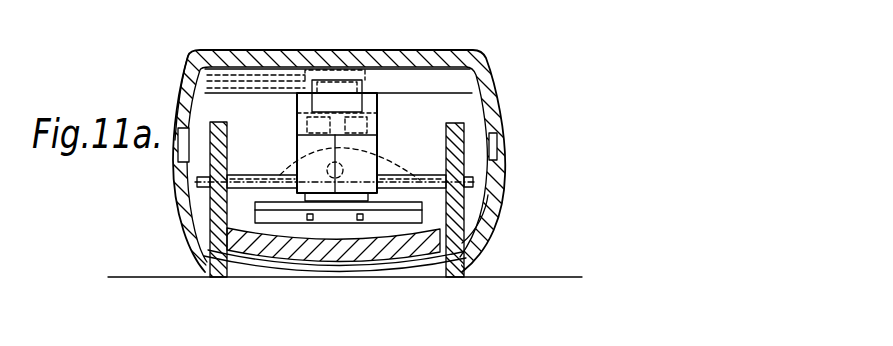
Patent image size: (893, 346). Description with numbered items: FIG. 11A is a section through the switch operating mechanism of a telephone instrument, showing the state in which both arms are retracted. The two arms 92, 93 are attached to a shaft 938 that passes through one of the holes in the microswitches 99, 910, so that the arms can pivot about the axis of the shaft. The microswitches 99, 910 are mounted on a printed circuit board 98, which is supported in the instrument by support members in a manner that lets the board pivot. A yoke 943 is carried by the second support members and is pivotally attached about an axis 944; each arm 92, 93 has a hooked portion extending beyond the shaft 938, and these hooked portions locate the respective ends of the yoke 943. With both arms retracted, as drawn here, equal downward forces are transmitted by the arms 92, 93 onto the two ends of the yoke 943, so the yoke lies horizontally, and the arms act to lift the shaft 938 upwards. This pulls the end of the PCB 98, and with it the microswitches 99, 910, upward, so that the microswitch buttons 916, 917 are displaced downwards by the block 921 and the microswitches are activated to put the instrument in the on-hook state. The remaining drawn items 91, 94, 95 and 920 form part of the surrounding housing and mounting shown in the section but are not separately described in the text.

The housing 91 is at (507, 127).
The arm 92 is at (453, 122).
The arm 93 is at (182, 95).
The bottom wall 94 is at (496, 199).
The slot 95 is at (203, 168).
The printed circuit board 98 is at (287, 207).
The microswitch 99 is at (352, 183).
The microswitch 910 is at (322, 183).
The microswitch button 916 is at (365, 147).
The microswitch button 917 is at (296, 130).
The top plate 920 is at (382, 50).
The block 921 is at (295, 103).
The shaft 938 is at (182, 238).
The yoke 943 is at (415, 160).
The axis 944 is at (380, 207).